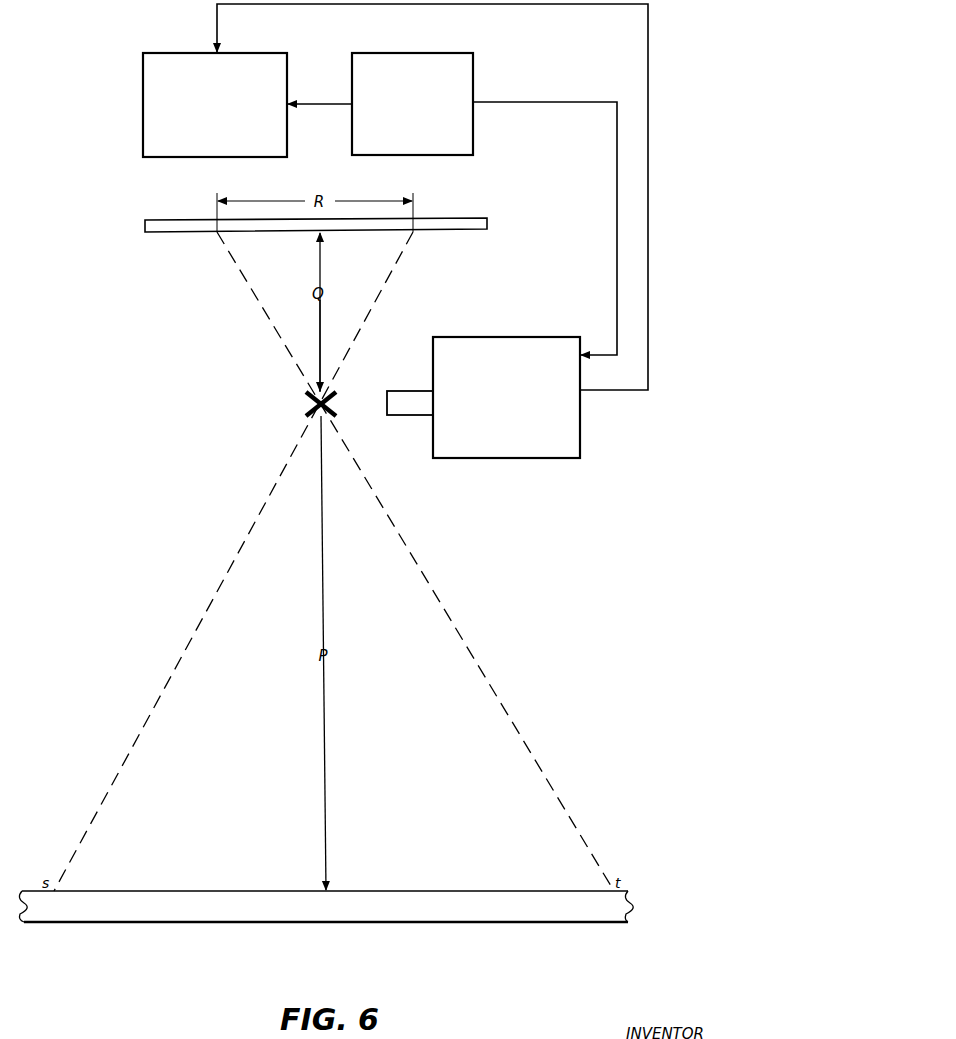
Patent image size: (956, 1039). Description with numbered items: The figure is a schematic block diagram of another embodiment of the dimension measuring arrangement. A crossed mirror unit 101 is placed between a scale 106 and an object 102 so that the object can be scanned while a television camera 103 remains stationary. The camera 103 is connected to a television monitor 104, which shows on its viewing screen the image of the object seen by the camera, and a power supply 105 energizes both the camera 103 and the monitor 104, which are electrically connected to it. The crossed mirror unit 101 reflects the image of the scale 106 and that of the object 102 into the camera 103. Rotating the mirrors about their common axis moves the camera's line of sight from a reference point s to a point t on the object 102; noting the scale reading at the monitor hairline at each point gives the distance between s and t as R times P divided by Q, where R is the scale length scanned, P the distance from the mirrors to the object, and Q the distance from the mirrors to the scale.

The crossed mirror unit 101 is at (312, 403).
The object 102 is at (425, 896).
The television camera 103 is at (541, 447).
The television monitor 104 is at (151, 70).
The power supply 105 is at (462, 75).
The scale 106 is at (478, 222).